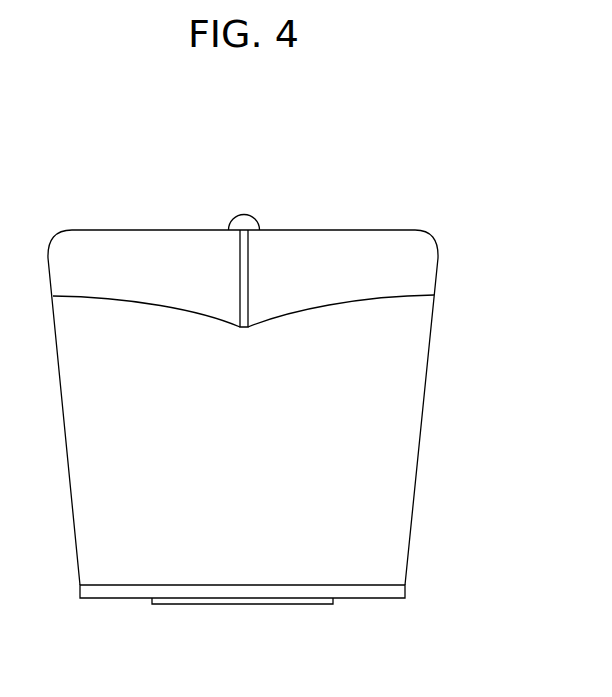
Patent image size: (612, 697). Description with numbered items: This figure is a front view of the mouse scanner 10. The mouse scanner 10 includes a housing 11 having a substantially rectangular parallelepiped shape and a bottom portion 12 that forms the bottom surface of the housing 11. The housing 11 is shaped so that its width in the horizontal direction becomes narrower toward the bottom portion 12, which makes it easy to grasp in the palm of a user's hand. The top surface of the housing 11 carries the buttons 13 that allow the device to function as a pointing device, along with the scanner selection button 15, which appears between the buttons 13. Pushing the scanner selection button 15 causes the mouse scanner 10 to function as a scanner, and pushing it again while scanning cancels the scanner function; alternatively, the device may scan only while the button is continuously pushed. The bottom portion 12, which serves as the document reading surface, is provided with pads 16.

The mouse scanner 10 is at (500, 248).
The housing 11 is at (407, 380).
The bottom portion 12 is at (390, 593).
The buttons 13 is at (107, 250).
The scanner selection button 15 is at (244, 216).
The pads 16 is at (307, 600).